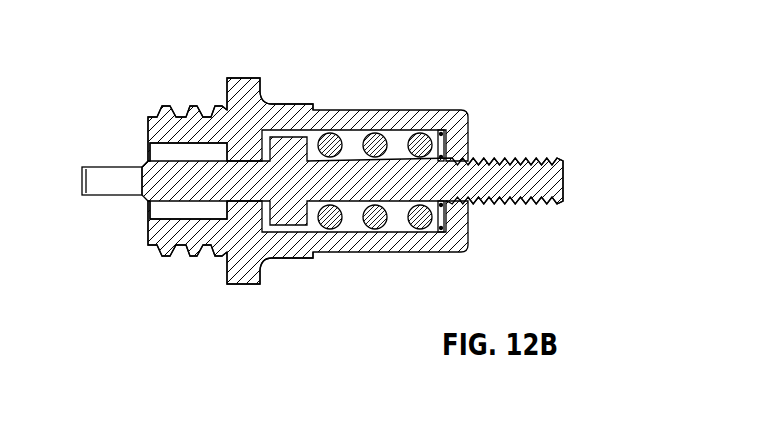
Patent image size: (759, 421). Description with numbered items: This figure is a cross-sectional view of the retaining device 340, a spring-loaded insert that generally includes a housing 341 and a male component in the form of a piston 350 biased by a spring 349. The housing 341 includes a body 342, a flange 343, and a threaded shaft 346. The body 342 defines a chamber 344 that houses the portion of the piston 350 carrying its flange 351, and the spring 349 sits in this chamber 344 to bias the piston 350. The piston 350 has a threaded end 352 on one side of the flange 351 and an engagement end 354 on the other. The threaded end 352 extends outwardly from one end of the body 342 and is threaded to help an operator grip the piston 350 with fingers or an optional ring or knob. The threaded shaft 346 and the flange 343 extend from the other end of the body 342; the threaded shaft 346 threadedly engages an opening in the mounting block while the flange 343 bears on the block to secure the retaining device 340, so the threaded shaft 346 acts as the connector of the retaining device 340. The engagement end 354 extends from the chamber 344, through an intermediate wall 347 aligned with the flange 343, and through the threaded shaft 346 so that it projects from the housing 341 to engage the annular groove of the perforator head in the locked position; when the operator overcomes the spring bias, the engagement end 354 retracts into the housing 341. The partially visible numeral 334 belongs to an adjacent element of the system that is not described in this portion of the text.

The connector 334 is at (14, 125).
The retaining device 340 is at (106, 50).
The housing 341 is at (292, 96).
The body 342 is at (433, 110).
The flange 343 is at (240, 78).
The chamber 344 is at (331, 229).
The threaded shaft 346 is at (168, 106).
The intermediate wall 347 is at (228, 210).
The spring 349 is at (376, 115).
The piston 350 is at (398, 220).
The flange 351 is at (307, 143).
The threaded end 352 is at (516, 158).
The engagement end 354 is at (100, 166).